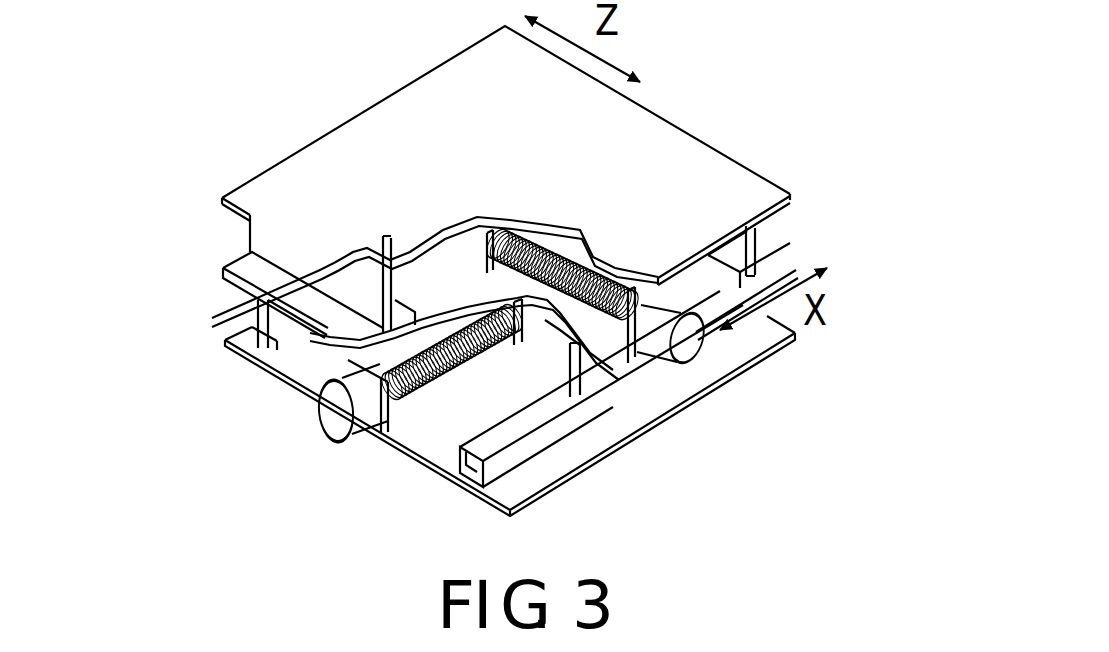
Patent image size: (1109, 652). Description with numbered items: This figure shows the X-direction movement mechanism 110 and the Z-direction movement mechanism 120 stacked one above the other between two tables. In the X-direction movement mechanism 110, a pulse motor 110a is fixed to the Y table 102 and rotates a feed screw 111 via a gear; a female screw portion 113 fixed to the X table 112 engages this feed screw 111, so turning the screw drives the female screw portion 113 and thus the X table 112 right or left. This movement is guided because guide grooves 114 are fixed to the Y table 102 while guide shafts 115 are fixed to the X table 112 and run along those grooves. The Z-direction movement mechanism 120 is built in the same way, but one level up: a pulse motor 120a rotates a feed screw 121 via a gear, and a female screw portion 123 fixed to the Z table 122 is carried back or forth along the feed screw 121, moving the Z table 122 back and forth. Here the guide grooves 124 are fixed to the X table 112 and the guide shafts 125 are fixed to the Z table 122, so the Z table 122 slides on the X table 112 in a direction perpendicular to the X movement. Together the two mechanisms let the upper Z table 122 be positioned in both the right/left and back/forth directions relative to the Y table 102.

The Y table 102 is at (752, 343).
The X-direction movement mechanism 110 is at (517, 418).
The pulse motor 110a is at (358, 418).
The feed screw 111 is at (440, 365).
The X table 112 is at (258, 272).
The female screw portion 113 is at (538, 322).
The guide grooves 114 is at (287, 350).
The guide shafts 115 is at (260, 318).
The Z-direction movement mechanism 120 is at (698, 112).
The pulse motor 120a is at (683, 347).
The feed screw 121 is at (598, 280).
The Z table 122 is at (745, 200).
The female screw portion 123 is at (478, 222).
The guide grooves 124 is at (770, 265).
The guide shafts 125 is at (760, 238).